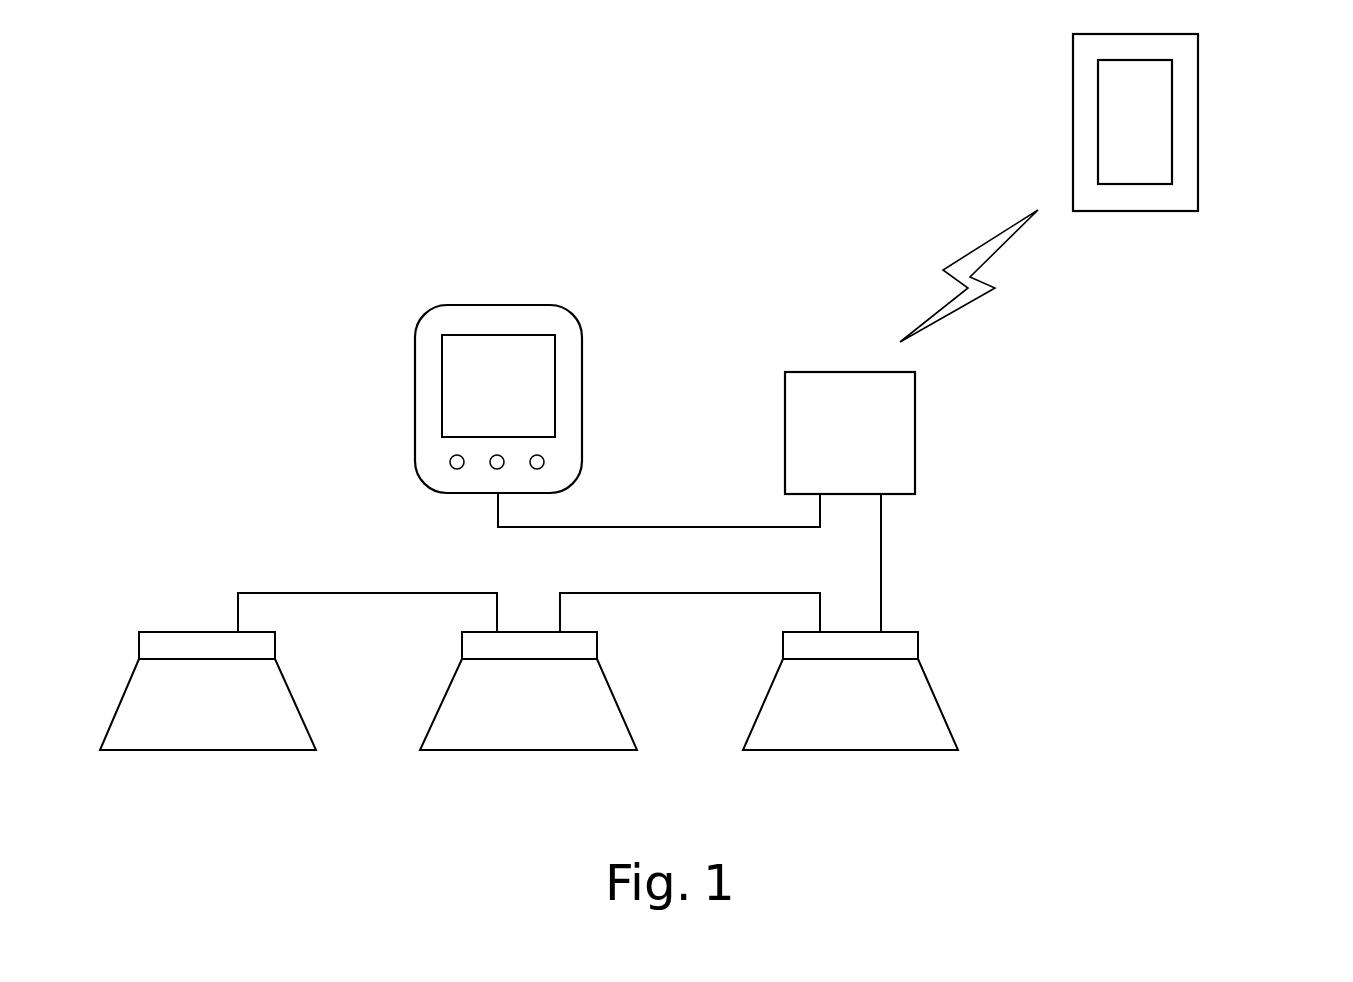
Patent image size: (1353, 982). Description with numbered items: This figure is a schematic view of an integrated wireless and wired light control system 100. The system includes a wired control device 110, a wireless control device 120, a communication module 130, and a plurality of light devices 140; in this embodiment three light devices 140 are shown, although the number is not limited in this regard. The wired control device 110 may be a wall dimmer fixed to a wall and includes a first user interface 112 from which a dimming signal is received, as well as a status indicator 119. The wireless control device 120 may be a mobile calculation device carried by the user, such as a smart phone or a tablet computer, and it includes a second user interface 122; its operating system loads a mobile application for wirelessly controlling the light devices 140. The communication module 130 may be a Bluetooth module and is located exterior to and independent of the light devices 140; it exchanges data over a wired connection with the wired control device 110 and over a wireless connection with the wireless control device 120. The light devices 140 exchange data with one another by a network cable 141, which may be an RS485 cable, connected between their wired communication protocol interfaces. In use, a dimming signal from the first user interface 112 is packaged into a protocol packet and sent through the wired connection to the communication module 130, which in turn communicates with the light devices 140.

The light control system 100 is at (243, 201).
The wired control device 110 is at (430, 343).
The first user interface 112 is at (497, 352).
The status indicator 119 is at (455, 459).
The wireless control device 120 is at (1185, 85).
The second user interface 122 is at (1153, 128).
The communication module 130 is at (900, 432).
The light devices 140 is at (210, 727).
The network cable 141 is at (368, 593).